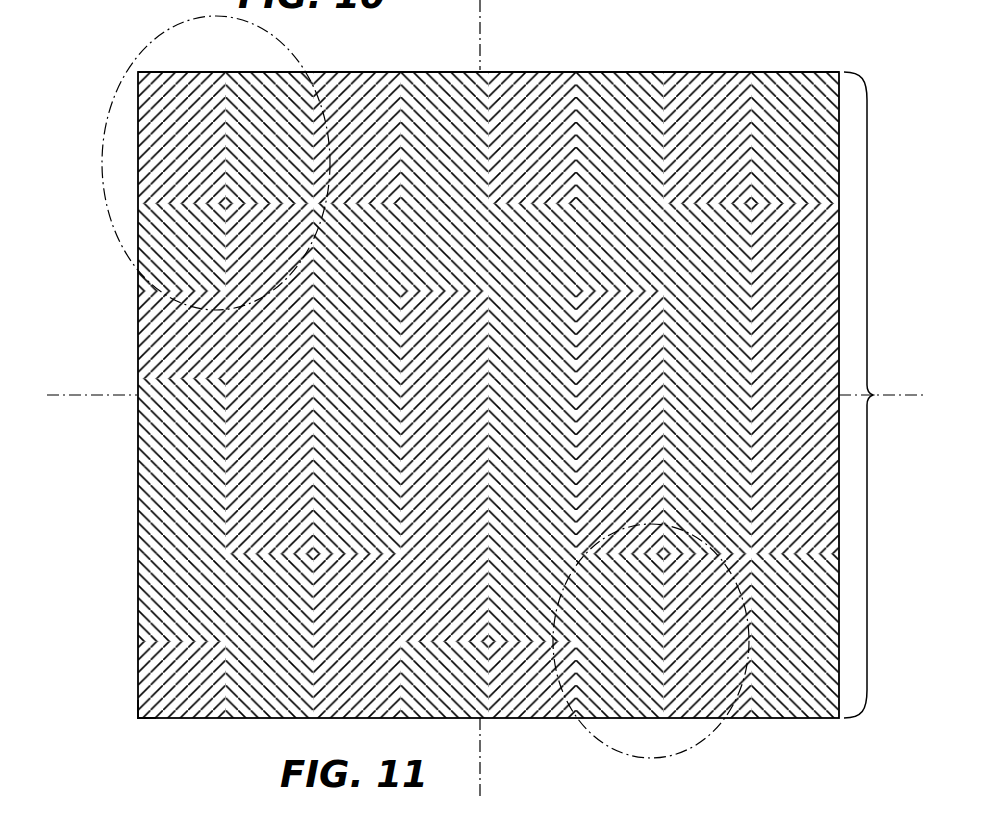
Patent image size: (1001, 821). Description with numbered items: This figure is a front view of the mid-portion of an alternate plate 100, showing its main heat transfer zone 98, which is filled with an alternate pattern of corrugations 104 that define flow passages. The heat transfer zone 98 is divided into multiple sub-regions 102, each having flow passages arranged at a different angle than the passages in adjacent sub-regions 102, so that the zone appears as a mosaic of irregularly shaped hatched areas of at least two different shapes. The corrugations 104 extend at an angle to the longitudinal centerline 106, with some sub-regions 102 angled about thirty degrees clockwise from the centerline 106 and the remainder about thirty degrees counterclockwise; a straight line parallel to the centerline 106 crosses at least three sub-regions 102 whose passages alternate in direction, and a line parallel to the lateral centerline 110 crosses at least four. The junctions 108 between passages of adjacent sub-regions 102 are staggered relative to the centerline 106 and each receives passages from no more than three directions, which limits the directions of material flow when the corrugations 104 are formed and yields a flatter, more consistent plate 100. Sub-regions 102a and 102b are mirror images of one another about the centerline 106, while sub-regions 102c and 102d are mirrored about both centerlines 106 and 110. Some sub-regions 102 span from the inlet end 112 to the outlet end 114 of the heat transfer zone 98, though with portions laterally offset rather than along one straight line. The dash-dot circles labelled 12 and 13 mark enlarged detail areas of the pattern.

The main heat transfer zone 98 is at (873, 395).
The alternate plate 100 is at (106, 58).
The sub-regions 102 is at (270, 92).
The sub-region 102a is at (165, 330).
The sub-region 102b is at (815, 297).
The sub-region 102c is at (290, 692).
The sub-region 102d is at (522, 698).
The corrugations 104 is at (165, 605).
The longitudinal centerline 106 is at (481, 35).
The junctions 108 is at (747, 75).
The lateral centerline 110 is at (103, 395).
The inlet end 112 is at (385, 72).
The outlet end 114 is at (138, 720).
The detail circle FIG. 12 is at (131, 260).
The detail circle FIG. 13 is at (713, 732).